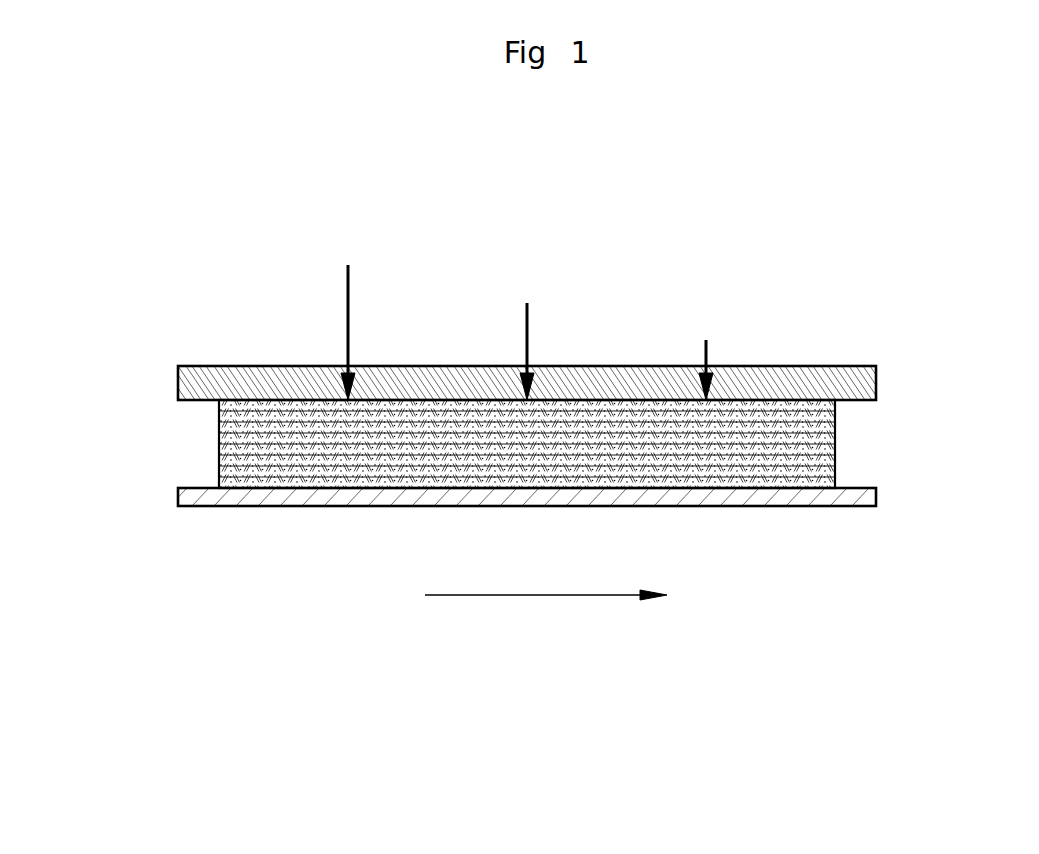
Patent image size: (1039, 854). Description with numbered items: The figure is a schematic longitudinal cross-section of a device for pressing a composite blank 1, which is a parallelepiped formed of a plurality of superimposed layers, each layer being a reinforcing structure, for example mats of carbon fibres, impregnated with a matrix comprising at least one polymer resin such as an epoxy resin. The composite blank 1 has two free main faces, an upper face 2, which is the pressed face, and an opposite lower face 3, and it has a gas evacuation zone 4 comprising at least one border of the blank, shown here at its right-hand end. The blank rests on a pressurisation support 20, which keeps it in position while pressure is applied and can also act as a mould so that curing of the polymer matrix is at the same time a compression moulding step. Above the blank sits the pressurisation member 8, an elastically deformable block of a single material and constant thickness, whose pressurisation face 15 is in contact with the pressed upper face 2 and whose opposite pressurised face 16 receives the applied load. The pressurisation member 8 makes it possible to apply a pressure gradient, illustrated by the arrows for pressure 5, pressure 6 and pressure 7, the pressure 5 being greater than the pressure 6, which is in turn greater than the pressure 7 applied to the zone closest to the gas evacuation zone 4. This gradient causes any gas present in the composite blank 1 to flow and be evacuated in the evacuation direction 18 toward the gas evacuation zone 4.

The composite blank 1 is at (242, 448).
The upper face 2 is at (307, 398).
The lower face 3 is at (237, 506).
The gas evacuation zone 4 is at (890, 438).
The pressure 5 is at (335, 274).
The pressure 6 is at (512, 311).
The pressure 7 is at (690, 345).
The pressurisation member 8 is at (817, 338).
The pressurisation face 15 is at (238, 402).
The pressurised face 16 is at (232, 367).
The evacuation direction 18 is at (545, 595).
The pressurisation support 20 is at (370, 495).